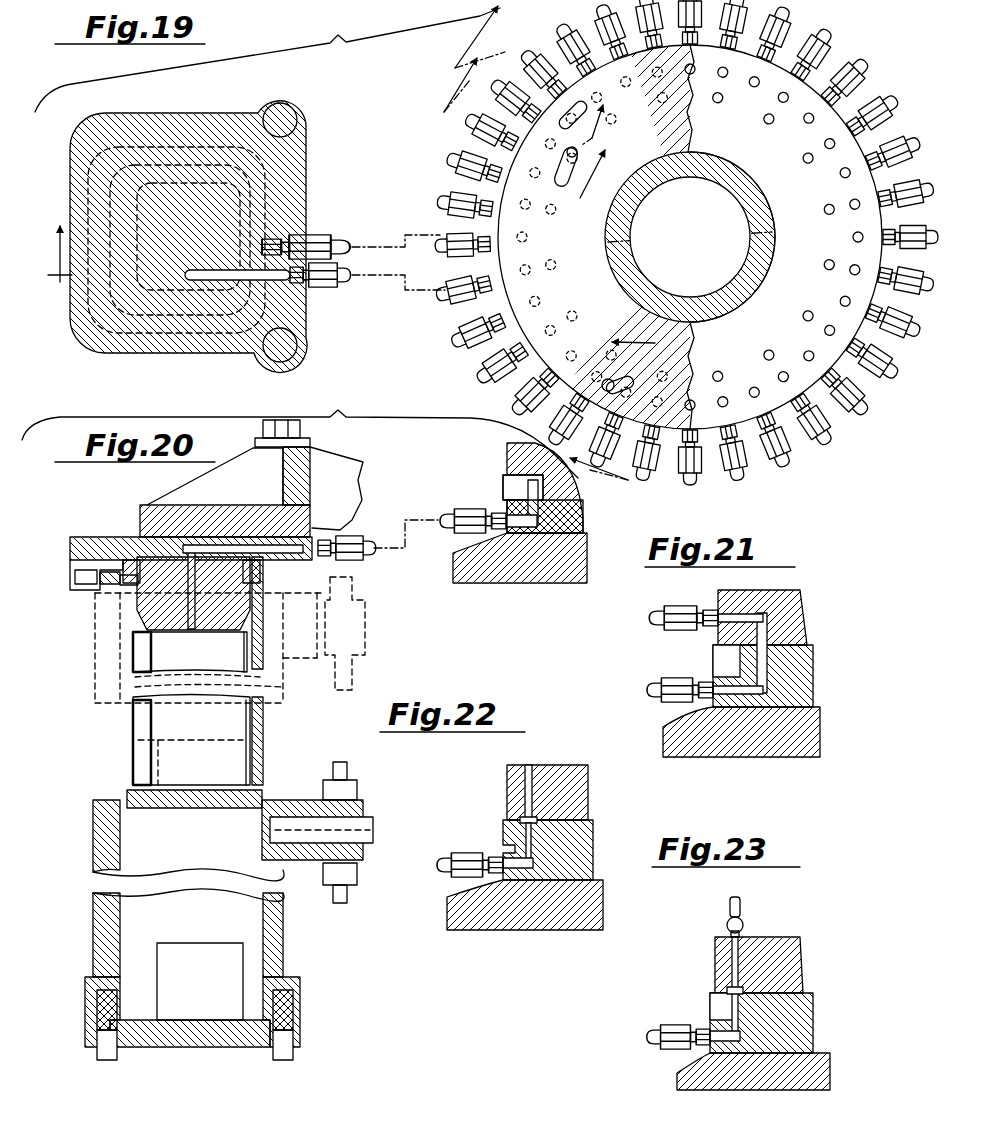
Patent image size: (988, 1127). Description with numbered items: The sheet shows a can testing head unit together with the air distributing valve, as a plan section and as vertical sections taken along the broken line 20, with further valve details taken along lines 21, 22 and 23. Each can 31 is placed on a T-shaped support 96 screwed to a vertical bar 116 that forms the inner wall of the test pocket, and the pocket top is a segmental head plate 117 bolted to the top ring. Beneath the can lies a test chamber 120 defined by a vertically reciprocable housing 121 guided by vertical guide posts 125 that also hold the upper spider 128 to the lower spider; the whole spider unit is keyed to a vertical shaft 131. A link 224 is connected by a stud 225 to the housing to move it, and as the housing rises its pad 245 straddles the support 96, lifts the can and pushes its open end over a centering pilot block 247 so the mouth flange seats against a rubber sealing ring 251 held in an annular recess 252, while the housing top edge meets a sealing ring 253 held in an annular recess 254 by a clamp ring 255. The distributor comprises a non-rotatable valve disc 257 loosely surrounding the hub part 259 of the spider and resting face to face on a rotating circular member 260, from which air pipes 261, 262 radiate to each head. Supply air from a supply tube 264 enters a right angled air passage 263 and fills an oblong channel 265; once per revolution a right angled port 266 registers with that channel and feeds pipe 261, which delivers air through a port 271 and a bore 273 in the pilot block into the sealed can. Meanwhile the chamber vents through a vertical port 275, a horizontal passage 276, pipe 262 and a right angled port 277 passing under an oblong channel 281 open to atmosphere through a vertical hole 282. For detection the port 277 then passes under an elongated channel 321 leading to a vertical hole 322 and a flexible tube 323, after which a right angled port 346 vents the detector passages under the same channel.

In FIG. 19, the section line 20 is at (406, 280).
In FIG. 19, the section line 21 is at (505, 133).
In FIG. 19, the section line 22 is at (560, 72).
In FIG. 19, the section line 23 is at (624, 422).
In FIG. 20, the can 31 is at (133, 660).
In FIG. 20, the T-shaped support 96 is at (200, 808).
In FIG. 20, the vertical bar 116 is at (264, 640).
In FIG. 19, the segmental head plate 117 is at (104, 127).
In FIG. 20, the segmental head plate 117 is at (88, 545).
In FIG. 20, the test chamber 120 is at (138, 915).
In FIG. 20, the housing 121 is at (100, 860).
In FIG. 19, the guide post 125 is at (284, 112).
In FIG. 20, the upper spider 128 is at (340, 478).
In FIG. 21, the upper spider 128 is at (822, 722).
In FIG. 22, the upper spider 128 is at (596, 898).
In FIG. 23, the upper spider 128 is at (832, 1075).
In FIG. 19, the vertical shaft 131 is at (713, 178).
In FIG. 20, the link 224 is at (352, 800).
In FIG. 20, the stud 225 is at (372, 826).
In FIG. 20, the pad 245 is at (200, 981).
In FIG. 20, the centering pilot block 247 is at (232, 608).
In FIG. 20, the rubber sealing ring 251 is at (140, 535).
In FIG. 19, the annular recess 252 is at (178, 162).
In FIG. 20, the annular recess 252 is at (130, 565).
In FIG. 20, the sealing ring 253 is at (108, 584).
In FIG. 19, the annular recess 254 is at (136, 130).
In FIG. 20, the annular recess 254 is at (128, 588).
In FIG. 20, the clamp ring 255 is at (80, 577).
In FIG. 19, the valve disc 257 is at (680, 110).
In FIG. 20, the valve disc 257 is at (512, 452).
In FIG. 21, the valve disc 257 is at (808, 603).
In FIG. 22, the valve disc 257 is at (590, 788).
In FIG. 23, the valve disc 257 is at (804, 950).
In FIG. 19, the hub part 259 is at (743, 183).
In FIG. 19, the circular member 260 is at (800, 92).
In FIG. 20, the circular member 260 is at (545, 530).
In FIG. 21, the circular member 260 is at (815, 657).
In FIG. 22, the circular member 260 is at (594, 828).
In FIG. 23, the circular member 260 is at (815, 1005).
In FIG. 19, the air pipe 261 is at (452, 291).
In FIG. 20, the air pipe 261 is at (442, 520).
In FIG. 21, the air pipe 261 is at (660, 688).
In FIG. 19, the air pipe 262 is at (440, 228).
In FIG. 22, the air pipe 262 is at (446, 858).
In FIG. 23, the air pipe 262 is at (655, 1045).
In FIG. 21, the air passage 263 is at (757, 613).
In FIG. 21, the supply tube 264 is at (668, 614).
In FIG. 19, the oblong channel 265 is at (550, 168).
In FIG. 21, the oblong channel 265 is at (780, 640).
In FIG. 19, the right angled port 266 is at (812, 232).
In FIG. 20, the right angled port 266 is at (560, 530).
In FIG. 21, the right angled port 266 is at (765, 680).
In FIG. 19, the port 271 is at (218, 283).
In FIG. 20, the port 271 is at (228, 543).
In FIG. 19, the bore 273 is at (188, 282).
In FIG. 20, the bore 273 is at (178, 592).
In FIG. 19, the vertical port 275 is at (270, 241).
In FIG. 20, the vertical port 275 is at (352, 575).
In FIG. 19, the horizontal passage 276 is at (292, 240).
In FIG. 19, the right angled port 277 is at (818, 236).
In FIG. 22, the right angled port 277 is at (530, 864).
In FIG. 23, the right angled port 277 is at (740, 1036).
In FIG. 19, the oblong channel 281 is at (555, 128).
In FIG. 22, the oblong channel 281 is at (518, 818).
In FIG. 22, the vertical hole 282 is at (522, 786).
In FIG. 19, the elongated channel 321 is at (598, 372).
In FIG. 23, the elongated channel 321 is at (727, 990).
In FIG. 23, the vertical hole 322 is at (734, 960).
In FIG. 23, the flexible tube 323 is at (740, 912).
In FIG. 19, the right angled port 346 is at (845, 242).
In FIG. 20, the right angled port 346 is at (525, 487).
In FIG. 21, the right angled port 346 is at (722, 660).
In FIG. 23, the right angled port 346 is at (728, 1008).